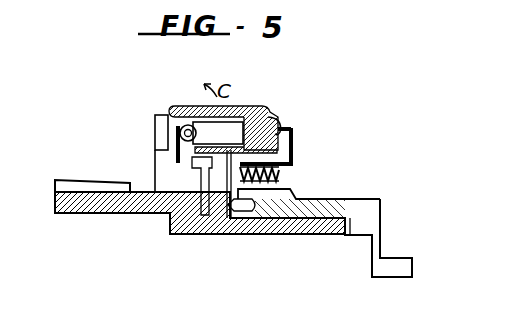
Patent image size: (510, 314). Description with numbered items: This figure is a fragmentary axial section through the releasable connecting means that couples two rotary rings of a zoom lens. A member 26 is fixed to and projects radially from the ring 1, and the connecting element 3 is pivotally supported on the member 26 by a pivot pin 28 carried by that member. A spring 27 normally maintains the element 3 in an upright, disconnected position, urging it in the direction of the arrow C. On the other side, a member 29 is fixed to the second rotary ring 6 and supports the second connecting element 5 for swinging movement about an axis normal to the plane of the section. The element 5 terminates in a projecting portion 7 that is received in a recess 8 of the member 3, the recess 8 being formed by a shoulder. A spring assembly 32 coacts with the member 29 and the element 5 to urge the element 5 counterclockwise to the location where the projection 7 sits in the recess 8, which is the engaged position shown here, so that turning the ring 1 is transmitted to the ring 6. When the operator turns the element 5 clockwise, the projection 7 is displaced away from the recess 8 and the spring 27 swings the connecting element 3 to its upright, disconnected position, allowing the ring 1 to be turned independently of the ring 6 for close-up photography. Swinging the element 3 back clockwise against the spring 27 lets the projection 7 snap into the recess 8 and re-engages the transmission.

The ring 1 is at (96, 208).
The connecting element 3 is at (268, 112).
The second connecting element 5 is at (293, 148).
The second rotary ring 6 is at (379, 201).
The projecting portion 7 is at (292, 127).
The recess 8 is at (279, 122).
The member 26 is at (156, 160).
The spring 27 is at (197, 126).
The pivot pin 28 is at (181, 131).
The member 29 is at (299, 194).
The spring assembly 32 is at (281, 174).